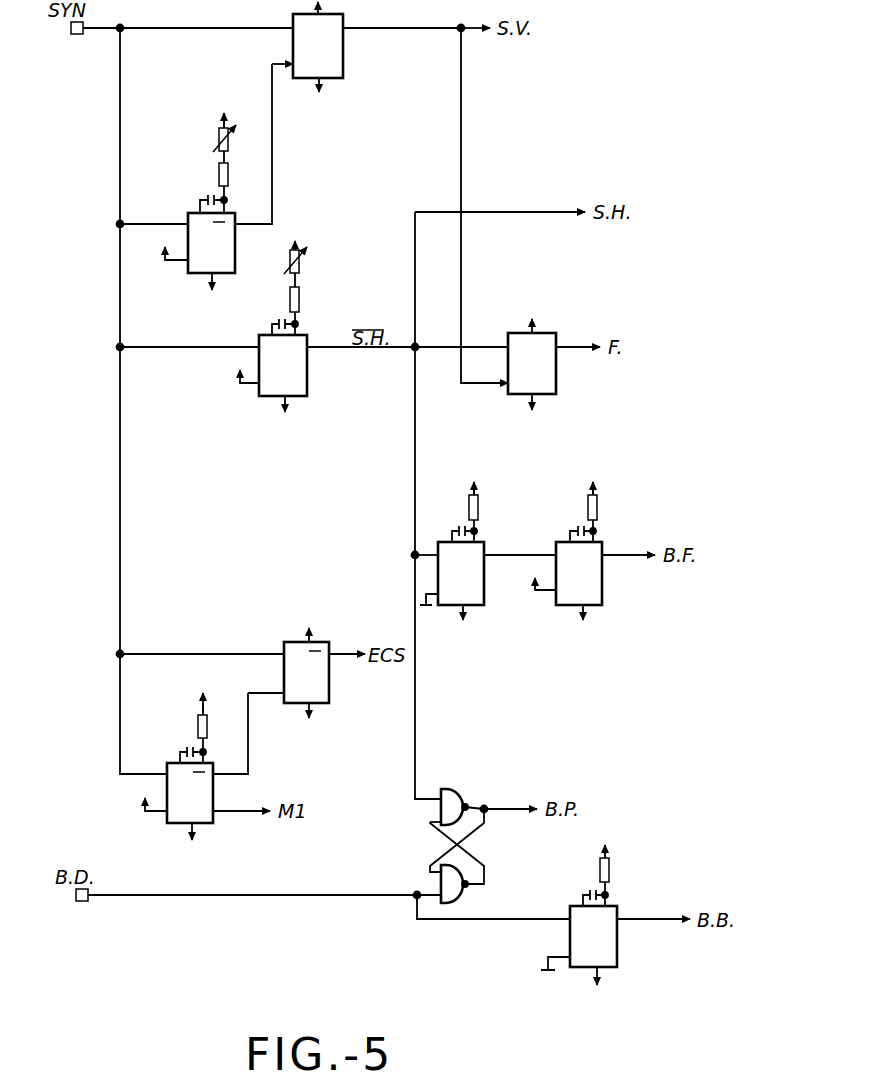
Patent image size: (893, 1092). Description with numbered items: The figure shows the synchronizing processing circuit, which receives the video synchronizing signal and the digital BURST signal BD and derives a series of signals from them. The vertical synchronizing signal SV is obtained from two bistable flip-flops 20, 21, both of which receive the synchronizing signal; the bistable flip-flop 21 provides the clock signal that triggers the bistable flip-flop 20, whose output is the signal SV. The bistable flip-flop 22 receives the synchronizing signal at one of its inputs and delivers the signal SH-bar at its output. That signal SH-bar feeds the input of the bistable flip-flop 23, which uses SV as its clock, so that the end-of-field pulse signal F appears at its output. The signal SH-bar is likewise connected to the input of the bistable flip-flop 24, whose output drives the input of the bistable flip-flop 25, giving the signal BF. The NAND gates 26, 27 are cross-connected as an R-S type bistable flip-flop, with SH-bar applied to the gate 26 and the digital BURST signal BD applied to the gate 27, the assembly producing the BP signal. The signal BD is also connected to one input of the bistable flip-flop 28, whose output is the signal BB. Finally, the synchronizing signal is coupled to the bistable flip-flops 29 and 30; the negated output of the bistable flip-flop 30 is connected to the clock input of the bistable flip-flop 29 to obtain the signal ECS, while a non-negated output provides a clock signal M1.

The bistable flip-flop 20 is at (336, 57).
The bistable flip-flop 21 is at (190, 275).
The bistable flip-flop 22 is at (298, 388).
The bistable flip-flop 23 is at (556, 390).
The bistable flip-flop 24 is at (473, 597).
The bistable flip-flop 25 is at (590, 596).
The NAND gate 26 is at (455, 794).
The NAND gate 27 is at (450, 890).
The bistable flip-flop 28 is at (607, 955).
The bistable flip-flop 29 is at (320, 688).
The bistable flip-flop 30 is at (200, 824).